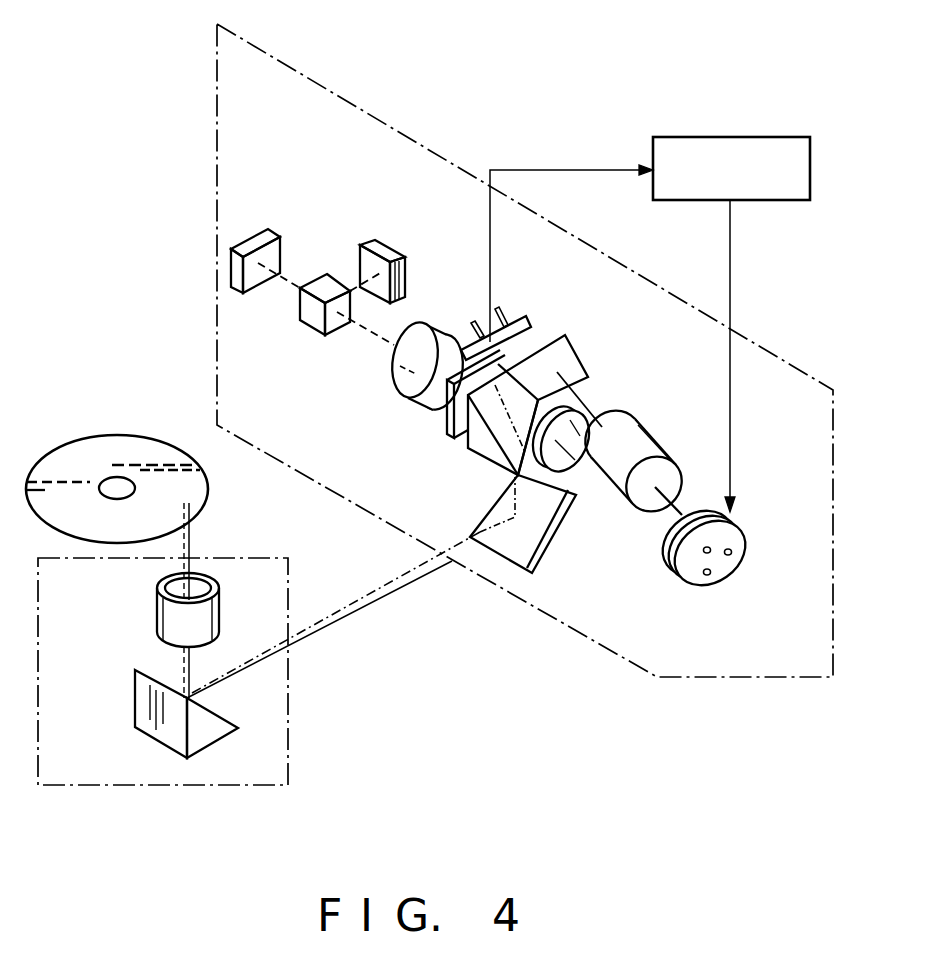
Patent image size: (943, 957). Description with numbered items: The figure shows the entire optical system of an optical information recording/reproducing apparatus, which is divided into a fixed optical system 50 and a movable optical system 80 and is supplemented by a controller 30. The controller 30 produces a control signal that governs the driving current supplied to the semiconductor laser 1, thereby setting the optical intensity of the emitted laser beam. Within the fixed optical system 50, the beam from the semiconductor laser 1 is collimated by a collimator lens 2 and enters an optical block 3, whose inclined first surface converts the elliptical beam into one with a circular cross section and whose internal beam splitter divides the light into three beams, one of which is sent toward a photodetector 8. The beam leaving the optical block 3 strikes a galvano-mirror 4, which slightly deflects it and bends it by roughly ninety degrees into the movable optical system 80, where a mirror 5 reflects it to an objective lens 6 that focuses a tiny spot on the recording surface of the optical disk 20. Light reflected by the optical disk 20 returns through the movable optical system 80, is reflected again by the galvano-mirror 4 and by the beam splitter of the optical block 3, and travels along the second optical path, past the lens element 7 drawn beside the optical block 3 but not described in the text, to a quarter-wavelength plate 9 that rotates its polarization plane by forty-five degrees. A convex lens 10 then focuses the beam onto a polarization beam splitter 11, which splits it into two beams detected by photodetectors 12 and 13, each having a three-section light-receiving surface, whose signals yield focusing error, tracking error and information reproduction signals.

The semiconductor laser 1 is at (720, 580).
The collimator lens 2 is at (670, 453).
The optical block 3 is at (585, 375).
The galvano-mirror 4 is at (552, 538).
The mirror 5 is at (135, 710).
The objective lens 6 is at (157, 610).
The lens 7 is at (573, 470).
The photodetector 8 is at (527, 318).
The 1/4 wavelength plate 9 is at (447, 440).
The convex lens 10 is at (402, 383).
The polarization beam splitter 11 is at (313, 328).
The photodetector 12 is at (402, 257).
The photodetector 13 is at (257, 237).
The optical disk 20 is at (98, 435).
The controller 30 is at (763, 202).
The fixed optical system 50 is at (792, 374).
The movable optical system 80 is at (78, 775).